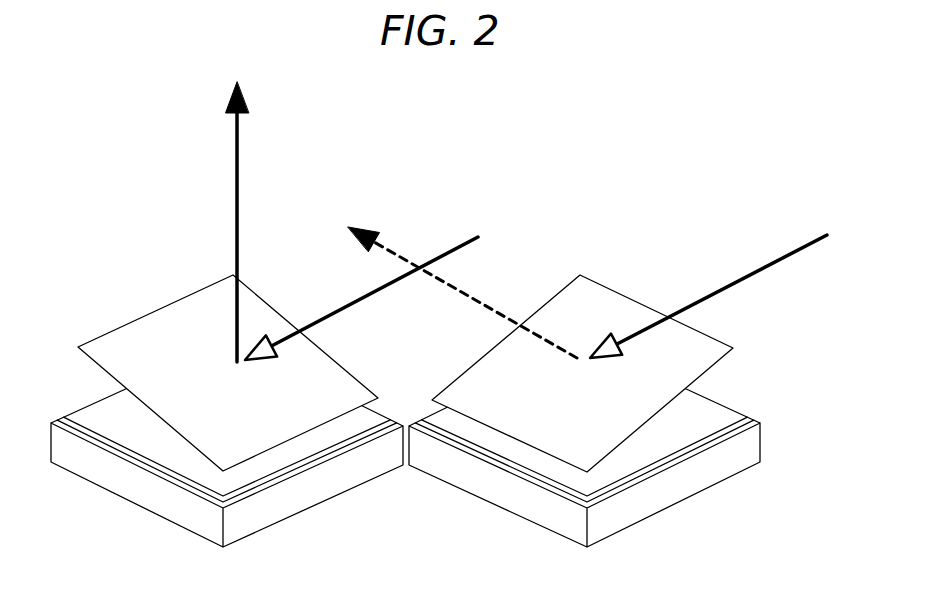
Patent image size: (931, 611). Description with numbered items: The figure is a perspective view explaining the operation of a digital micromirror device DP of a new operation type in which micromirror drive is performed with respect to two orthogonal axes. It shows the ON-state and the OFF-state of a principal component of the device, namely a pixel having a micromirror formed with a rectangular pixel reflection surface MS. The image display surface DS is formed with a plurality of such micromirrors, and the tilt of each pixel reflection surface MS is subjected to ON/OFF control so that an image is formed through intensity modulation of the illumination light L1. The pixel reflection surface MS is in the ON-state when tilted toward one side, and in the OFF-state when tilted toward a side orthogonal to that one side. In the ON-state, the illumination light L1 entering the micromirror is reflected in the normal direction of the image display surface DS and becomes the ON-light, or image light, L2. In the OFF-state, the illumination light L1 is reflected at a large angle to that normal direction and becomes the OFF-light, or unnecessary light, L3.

The image display surface DS is at (401, 342).
The digital micromirror device DP is at (423, 528).
The pixel reflection surface MS is at (243, 410).
The illumination light L1 is at (461, 245).
The ON-light L2 is at (235, 188).
The OFF-light L3 is at (495, 308).